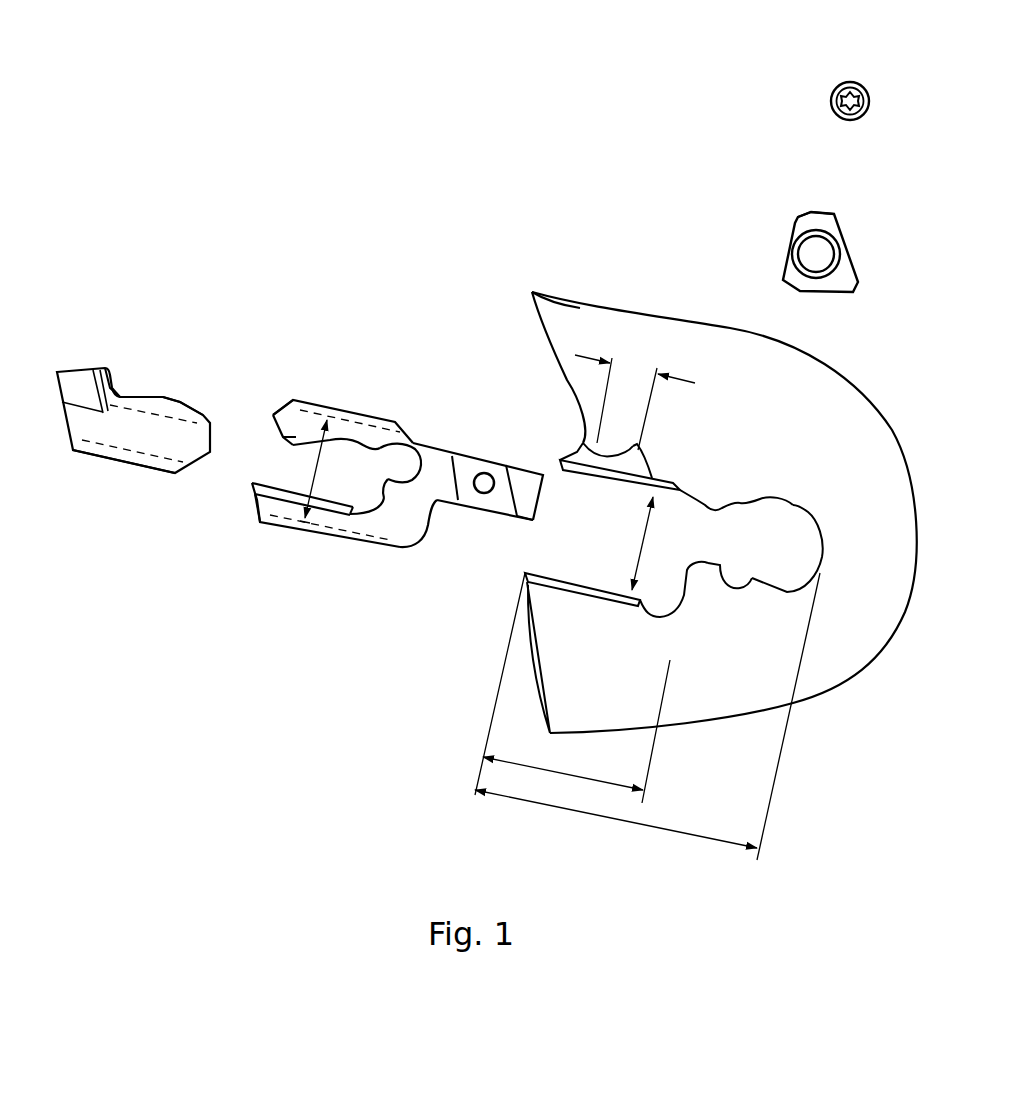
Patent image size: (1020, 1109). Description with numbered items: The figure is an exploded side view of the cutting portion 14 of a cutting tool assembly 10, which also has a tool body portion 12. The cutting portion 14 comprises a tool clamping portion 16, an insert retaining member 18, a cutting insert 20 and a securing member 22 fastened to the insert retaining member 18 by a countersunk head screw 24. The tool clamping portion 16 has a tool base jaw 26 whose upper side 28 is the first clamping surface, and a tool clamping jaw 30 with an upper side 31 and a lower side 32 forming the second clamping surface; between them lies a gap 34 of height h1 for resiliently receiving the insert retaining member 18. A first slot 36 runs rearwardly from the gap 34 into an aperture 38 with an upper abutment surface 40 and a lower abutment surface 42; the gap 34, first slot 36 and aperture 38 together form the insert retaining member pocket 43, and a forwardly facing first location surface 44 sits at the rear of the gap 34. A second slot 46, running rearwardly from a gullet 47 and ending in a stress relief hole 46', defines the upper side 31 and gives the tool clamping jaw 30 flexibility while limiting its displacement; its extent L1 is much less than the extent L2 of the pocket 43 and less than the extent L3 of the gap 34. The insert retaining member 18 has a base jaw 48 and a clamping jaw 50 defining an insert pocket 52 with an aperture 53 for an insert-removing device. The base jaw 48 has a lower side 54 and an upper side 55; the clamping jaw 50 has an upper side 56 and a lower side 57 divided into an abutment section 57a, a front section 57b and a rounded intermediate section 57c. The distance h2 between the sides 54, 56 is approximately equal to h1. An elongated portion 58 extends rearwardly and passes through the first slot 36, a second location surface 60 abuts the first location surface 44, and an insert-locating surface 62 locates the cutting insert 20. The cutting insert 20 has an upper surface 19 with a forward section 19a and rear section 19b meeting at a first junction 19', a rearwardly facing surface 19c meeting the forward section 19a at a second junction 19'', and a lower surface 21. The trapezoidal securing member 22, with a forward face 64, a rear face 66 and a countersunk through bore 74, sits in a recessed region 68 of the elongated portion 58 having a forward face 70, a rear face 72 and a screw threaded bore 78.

The cutting tool assembly 10 is at (385, 125).
The tool body portion 12 is at (822, 645).
The cutting portion 14 is at (572, 275).
The tool clamping portion 16 is at (532, 390).
The insert retaining member 18 is at (367, 395).
The upper surface 19 is at (146, 357).
The first junction 19' is at (172, 370).
The second junction 19'' is at (120, 355).
The forward section 19a is at (133, 394).
The rear section 19b is at (190, 402).
The rearwardly facing surface 19c is at (117, 388).
The cutting insert 20 is at (88, 488).
The lower surface 21 is at (124, 467).
The securing member 22 is at (797, 195).
The countersunk head screw 24 is at (828, 100).
The tool base jaw 26 is at (560, 650).
The upper side 28 is at (600, 597).
The tool clamping jaw 30 is at (577, 455).
The upper side 31 is at (605, 452).
The lower side 32 is at (635, 490).
The gap 34 is at (583, 527).
The first slot 36 is at (712, 515).
The aperture 38 is at (783, 523).
The upper abutment surface 40 is at (765, 508).
The lower abutment surface 42 is at (748, 580).
The insert retaining member pocket 43 is at (547, 552).
The first location surface 44 is at (693, 590).
The second slot 46 is at (561, 367).
The stress relief hole 46' is at (669, 449).
The gullet 47 is at (560, 365).
The base jaw 48 is at (265, 510).
The clamping jaw 50 is at (300, 402).
The insert pocket 52 is at (275, 460).
The aperture 53 is at (405, 462).
The lower side 54 is at (336, 540).
The upper side 55 is at (255, 480).
The upper side 56 is at (378, 415).
The lower side 57 is at (327, 455).
The abutment section 57a is at (335, 443).
The front section 57b is at (282, 433).
The intermediate section 57c is at (290, 438).
The elongated portion 58 is at (497, 422).
The second location surface 60 is at (428, 520).
The insert-locating surface 62 is at (372, 515).
The forward face 64 is at (796, 228).
The rear face 66 is at (845, 262).
The recessed region 68 is at (497, 505).
The forward face 70 is at (455, 495).
The rear face 72 is at (500, 500).
The countersunk through bore 74 is at (815, 258).
The screw threaded bore 78 is at (484, 473).
The distance between clamping surfaces h1 is at (634, 543).
The distance between clamping abutment surfaces h2 is at (306, 471).
The rearward linear extent of second slot L1 is at (635, 394).
The rearward linear extent of insert retaining member pocket L2 is at (647, 716).
The rearward linear extent of gap L3 is at (572, 688).